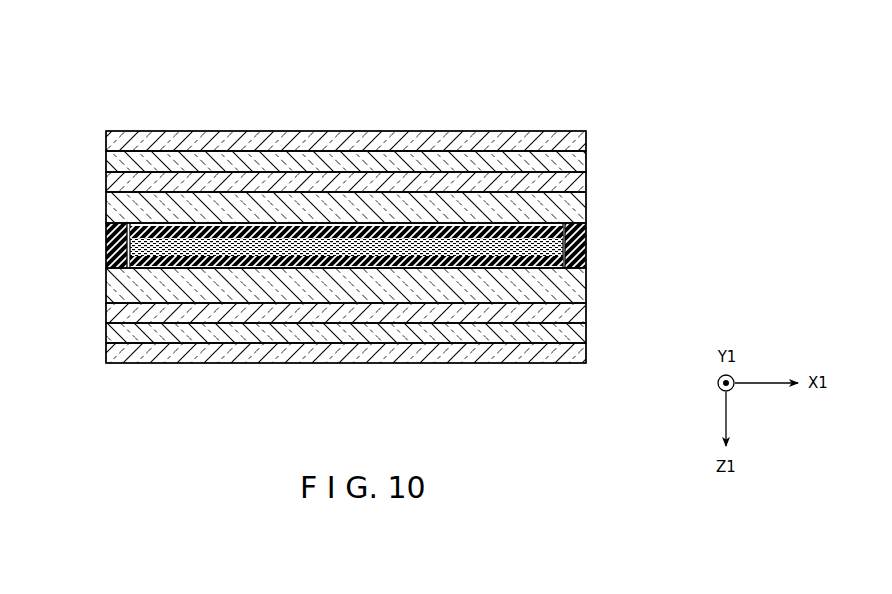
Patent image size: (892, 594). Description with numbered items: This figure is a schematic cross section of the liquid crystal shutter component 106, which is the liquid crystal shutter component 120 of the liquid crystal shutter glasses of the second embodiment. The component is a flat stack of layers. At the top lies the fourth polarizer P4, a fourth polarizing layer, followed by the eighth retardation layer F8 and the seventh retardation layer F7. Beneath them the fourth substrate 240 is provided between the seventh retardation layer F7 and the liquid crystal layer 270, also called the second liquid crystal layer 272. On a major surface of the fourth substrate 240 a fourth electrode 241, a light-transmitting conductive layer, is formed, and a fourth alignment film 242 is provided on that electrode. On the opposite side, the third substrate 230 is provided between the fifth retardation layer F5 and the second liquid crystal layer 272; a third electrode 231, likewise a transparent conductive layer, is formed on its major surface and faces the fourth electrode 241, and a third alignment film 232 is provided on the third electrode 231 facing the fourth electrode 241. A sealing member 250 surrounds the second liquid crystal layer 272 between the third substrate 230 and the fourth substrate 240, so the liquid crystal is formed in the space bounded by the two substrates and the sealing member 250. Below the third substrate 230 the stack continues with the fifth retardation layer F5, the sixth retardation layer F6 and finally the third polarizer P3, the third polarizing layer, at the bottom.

The liquid crystal shutter component 106 is at (362, 217).
The liquid crystal shutter component 120 is at (362, 217).
The fourth polarizer P4 is at (586, 134).
The eighth retardation layer F8 is at (586, 158).
The seventh retardation layer F7 is at (586, 180).
The fourth substrate 240 is at (586, 205).
The fourth electrode 241 is at (346, 159).
The fourth alignment film 242 is at (326, 229).
The liquid crystal layer 270 is at (418, 246).
The second liquid crystal layer 272 is at (418, 246).
The sealing member 250 is at (106, 243).
The third substrate 230 is at (586, 283).
The third electrode 231 is at (346, 334).
The third alignment film 232 is at (355, 268).
The fifth retardation layer F5 is at (586, 310).
The sixth retardation layer F6 is at (586, 337).
The third polarizer P3 is at (586, 362).